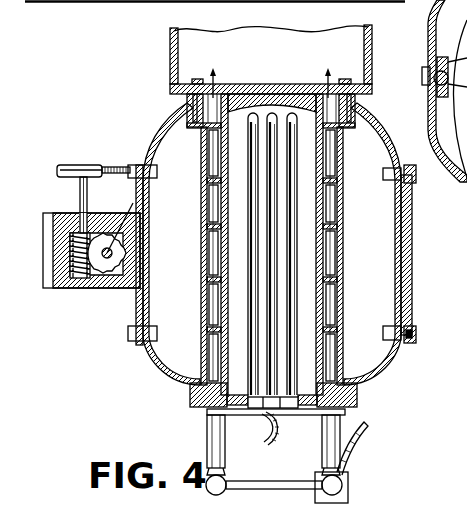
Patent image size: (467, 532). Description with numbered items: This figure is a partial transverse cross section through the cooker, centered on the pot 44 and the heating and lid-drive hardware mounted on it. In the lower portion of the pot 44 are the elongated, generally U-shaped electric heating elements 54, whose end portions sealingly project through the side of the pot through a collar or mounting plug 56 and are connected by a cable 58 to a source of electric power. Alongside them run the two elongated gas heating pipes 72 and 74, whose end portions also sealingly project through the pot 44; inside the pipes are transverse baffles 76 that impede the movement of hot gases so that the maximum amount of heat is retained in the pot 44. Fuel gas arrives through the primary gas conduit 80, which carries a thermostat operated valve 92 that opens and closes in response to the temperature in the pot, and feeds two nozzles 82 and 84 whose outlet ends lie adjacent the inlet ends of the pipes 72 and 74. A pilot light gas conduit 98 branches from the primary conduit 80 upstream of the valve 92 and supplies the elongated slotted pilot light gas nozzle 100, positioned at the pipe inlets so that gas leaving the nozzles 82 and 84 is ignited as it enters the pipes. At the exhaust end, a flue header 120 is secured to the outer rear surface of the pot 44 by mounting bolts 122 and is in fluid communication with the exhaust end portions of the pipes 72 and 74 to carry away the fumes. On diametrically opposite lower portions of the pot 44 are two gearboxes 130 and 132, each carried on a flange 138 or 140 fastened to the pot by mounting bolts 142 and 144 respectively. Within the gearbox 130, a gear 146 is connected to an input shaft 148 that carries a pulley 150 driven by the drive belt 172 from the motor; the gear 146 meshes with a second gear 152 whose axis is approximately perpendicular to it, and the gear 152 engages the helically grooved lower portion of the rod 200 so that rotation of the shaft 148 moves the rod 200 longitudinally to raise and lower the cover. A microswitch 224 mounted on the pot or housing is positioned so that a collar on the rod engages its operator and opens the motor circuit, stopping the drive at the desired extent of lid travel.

The flue header 120 is at (187, 46).
The mounting bolts 122 is at (197, 82).
The microswitch 224 is at (428, 70).
The pulley 150 is at (80, 165).
The drive belt 172 is at (115, 167).
The mounting bolts 142 is at (128, 165).
The input shaft 148 is at (80, 198).
The rod 200 is at (138, 194).
The gear 146 is at (70, 236).
The gearbox 130 is at (62, 288).
The gear 152 is at (108, 272).
The flange 138 is at (136, 300).
The baffles 76 is at (216, 138).
The heating elements 54 is at (252, 205).
The gas heating pipe 72 is at (201, 296).
The gas heating pipe 74 is at (343, 298).
The pot 44 is at (372, 366).
The mounting bolts 144 is at (412, 183).
The gearbox 132 is at (412, 285).
The flange 140 is at (411, 328).
The pilot light gas nozzle 100 is at (207, 412).
The nozzle 82 is at (214, 442).
The mounting plug 56 is at (266, 410).
The pilot light gas conduit 98 is at (279, 432).
The cable 58 is at (280, 425).
The nozzle 84 is at (338, 454).
The thermostat operated valve 92 is at (350, 496).
The primary gas conduit 80 is at (287, 490).